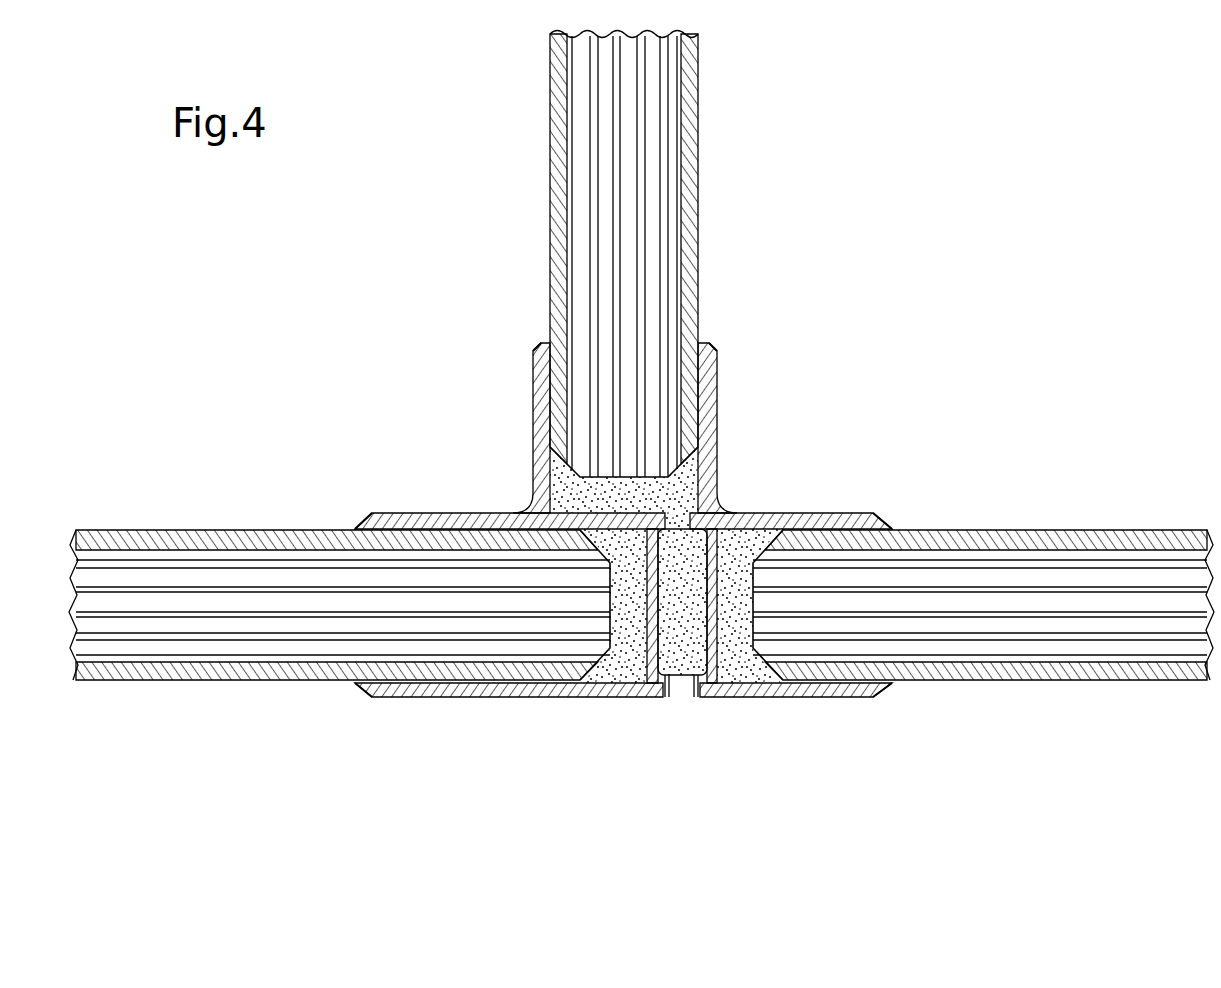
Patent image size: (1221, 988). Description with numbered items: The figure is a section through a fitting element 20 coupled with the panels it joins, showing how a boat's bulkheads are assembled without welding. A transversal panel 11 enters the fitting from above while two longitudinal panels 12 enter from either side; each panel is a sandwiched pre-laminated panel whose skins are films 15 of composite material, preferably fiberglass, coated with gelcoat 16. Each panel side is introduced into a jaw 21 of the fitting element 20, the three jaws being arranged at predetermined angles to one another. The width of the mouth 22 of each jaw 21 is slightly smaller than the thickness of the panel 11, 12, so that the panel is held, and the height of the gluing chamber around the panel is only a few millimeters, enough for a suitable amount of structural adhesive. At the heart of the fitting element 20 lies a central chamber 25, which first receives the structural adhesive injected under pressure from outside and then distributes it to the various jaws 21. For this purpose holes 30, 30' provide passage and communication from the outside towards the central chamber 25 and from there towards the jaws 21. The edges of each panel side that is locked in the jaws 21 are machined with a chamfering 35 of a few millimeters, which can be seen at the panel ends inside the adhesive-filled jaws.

The transversal panel 11 is at (708, 132).
The longitudinal panel 12 is at (298, 518).
The film 15 is at (560, 218).
The gelcoat 16 is at (550, 158).
The fitting element 20 is at (802, 502).
The jaw 21 is at (533, 390).
The mouth 22 is at (713, 344).
The central chamber 25 is at (703, 690).
The hole 30 is at (682, 641).
The hole 30' is at (670, 580).
The chamfering 35 is at (552, 473).